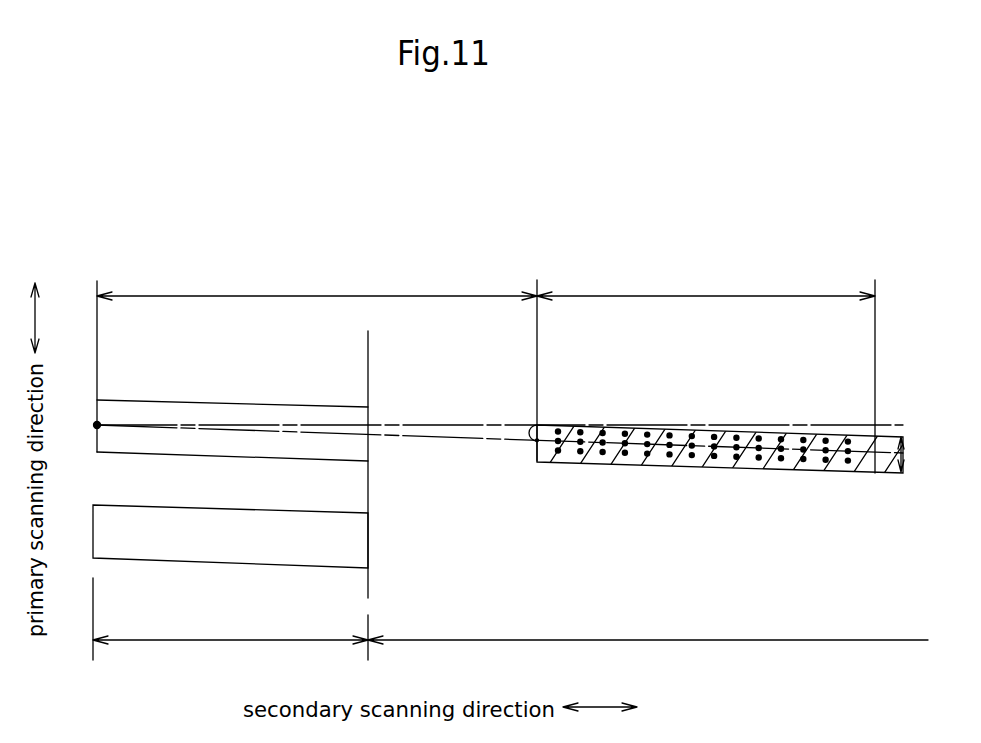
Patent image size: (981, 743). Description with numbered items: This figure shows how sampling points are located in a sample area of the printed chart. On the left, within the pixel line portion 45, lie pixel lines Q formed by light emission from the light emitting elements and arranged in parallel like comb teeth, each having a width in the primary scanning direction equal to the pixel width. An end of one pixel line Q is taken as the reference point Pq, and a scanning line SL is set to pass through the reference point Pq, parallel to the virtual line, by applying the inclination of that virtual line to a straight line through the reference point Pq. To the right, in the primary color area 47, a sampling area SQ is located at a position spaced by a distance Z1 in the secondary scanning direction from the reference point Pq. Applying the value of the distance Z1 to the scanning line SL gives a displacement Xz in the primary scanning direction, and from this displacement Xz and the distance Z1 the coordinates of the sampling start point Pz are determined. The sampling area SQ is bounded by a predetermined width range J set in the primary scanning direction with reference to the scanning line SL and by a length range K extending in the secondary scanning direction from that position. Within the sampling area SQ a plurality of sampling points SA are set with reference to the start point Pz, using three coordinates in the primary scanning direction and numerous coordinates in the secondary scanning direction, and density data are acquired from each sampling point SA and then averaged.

The pixel line Q is at (195, 408).
The reference point Pq is at (94, 425).
The scanning line SL is at (481, 441).
The displacement Xz is at (531, 430).
The sampling start point Pz is at (535, 442).
The sampling area SQ is at (721, 465).
The sampling point SA is at (665, 435).
The width range J is at (905, 454).
The distance Z1 is at (317, 284).
The length range K is at (706, 284).
The pixel line portion 45 is at (230, 629).
The primary color area 47 is at (648, 629).